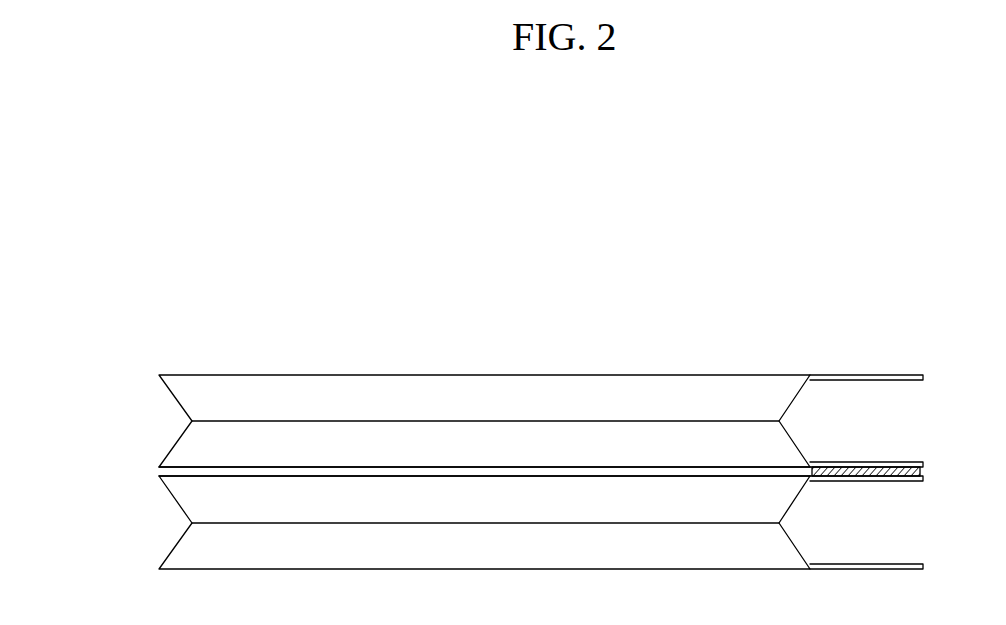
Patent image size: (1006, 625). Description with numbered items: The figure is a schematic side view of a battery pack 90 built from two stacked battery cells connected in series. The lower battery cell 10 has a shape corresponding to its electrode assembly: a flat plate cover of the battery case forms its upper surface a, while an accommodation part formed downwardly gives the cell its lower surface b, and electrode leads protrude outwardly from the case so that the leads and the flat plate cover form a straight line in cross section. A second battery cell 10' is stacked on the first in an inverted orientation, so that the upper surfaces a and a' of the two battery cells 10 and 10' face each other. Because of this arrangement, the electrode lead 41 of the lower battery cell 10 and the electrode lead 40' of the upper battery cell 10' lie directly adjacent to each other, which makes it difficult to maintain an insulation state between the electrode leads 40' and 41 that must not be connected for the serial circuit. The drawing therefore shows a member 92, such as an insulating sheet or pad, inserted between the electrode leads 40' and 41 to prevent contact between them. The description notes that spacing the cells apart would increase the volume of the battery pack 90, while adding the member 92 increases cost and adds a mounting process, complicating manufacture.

The battery pack 90 is at (167, 256).
The battery cell 10' is at (453, 418).
The battery cell 10 is at (439, 516).
The upper surface a' is at (453, 444).
The upper surface a is at (456, 477).
The lower surface b is at (207, 523).
The electrode lead 40' is at (891, 435).
The member 92 is at (920, 471).
The electrode lead 41 is at (900, 482).